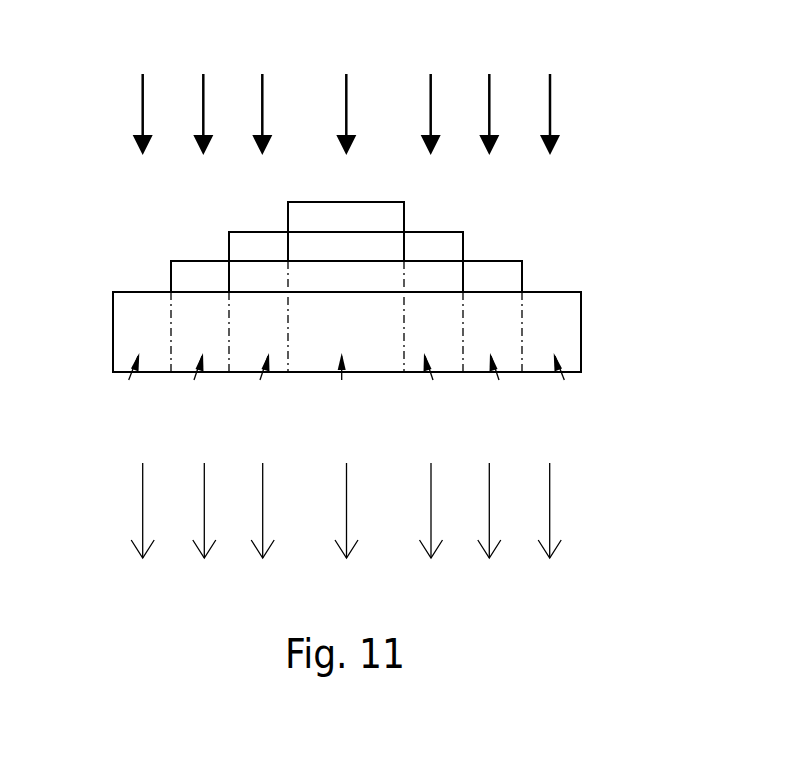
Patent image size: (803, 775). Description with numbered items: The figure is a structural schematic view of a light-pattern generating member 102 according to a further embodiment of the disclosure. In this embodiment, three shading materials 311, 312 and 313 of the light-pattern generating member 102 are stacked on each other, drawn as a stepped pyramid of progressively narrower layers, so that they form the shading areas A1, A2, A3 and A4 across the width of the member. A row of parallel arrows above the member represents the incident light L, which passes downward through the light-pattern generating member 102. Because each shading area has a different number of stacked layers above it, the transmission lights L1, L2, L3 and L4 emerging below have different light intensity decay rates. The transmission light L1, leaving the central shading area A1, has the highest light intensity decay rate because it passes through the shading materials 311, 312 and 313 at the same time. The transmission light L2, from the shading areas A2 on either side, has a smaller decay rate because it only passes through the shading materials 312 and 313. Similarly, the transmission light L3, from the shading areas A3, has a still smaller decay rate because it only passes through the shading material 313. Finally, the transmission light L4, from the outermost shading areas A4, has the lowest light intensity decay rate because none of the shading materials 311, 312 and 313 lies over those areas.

The light-pattern generating member 102 is at (98, 57).
The shading material 311 is at (404, 216).
The shading material 312 is at (463, 247).
The shading material 313 is at (522, 277).
The incident light L is at (346, 115).
The shading area A1 is at (342, 377).
The shading area A2 is at (263, 377).
The shading area A3 is at (197, 377).
The shading area A4 is at (130, 377).
The transmission light L1 is at (346, 512).
The transmission light L2 is at (262, 512).
The transmission light L3 is at (204, 512).
The transmission light L4 is at (141, 512).